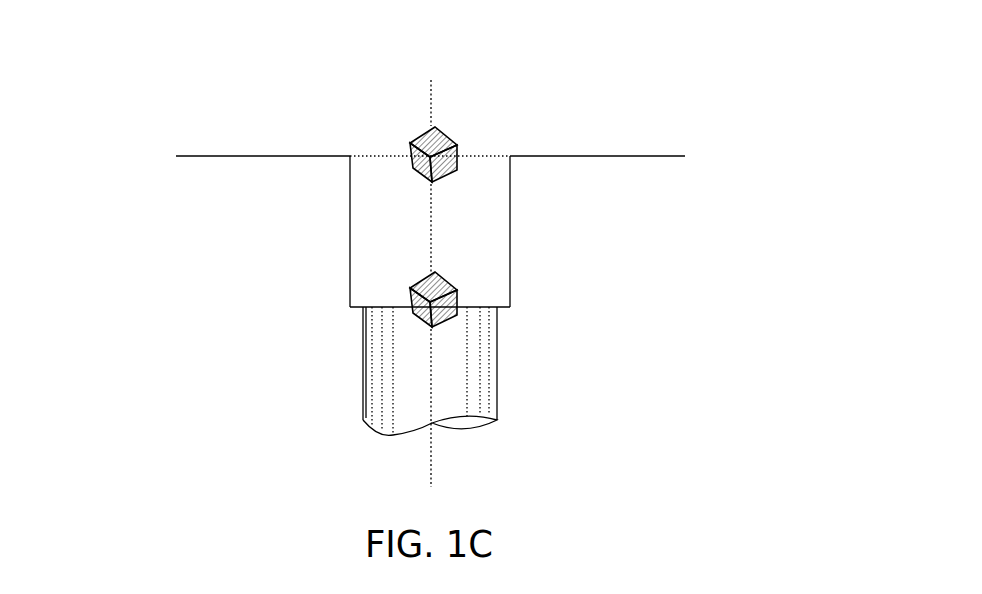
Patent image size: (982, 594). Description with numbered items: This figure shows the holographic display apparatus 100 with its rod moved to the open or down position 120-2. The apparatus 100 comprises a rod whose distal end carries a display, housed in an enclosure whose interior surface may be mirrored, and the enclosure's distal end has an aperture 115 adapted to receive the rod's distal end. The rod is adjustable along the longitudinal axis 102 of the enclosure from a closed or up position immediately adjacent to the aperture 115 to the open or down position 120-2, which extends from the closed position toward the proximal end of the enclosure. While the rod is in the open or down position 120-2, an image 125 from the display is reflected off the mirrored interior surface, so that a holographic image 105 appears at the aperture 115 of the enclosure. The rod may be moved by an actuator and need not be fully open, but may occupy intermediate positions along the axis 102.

The apparatus 100 is at (182, 80).
The aperture 115 is at (368, 158).
The longitudinal axis 102 is at (405, 284).
The holographic image 105 is at (457, 131).
The image 125 is at (408, 317).
The open or down position 120-2 is at (445, 362).